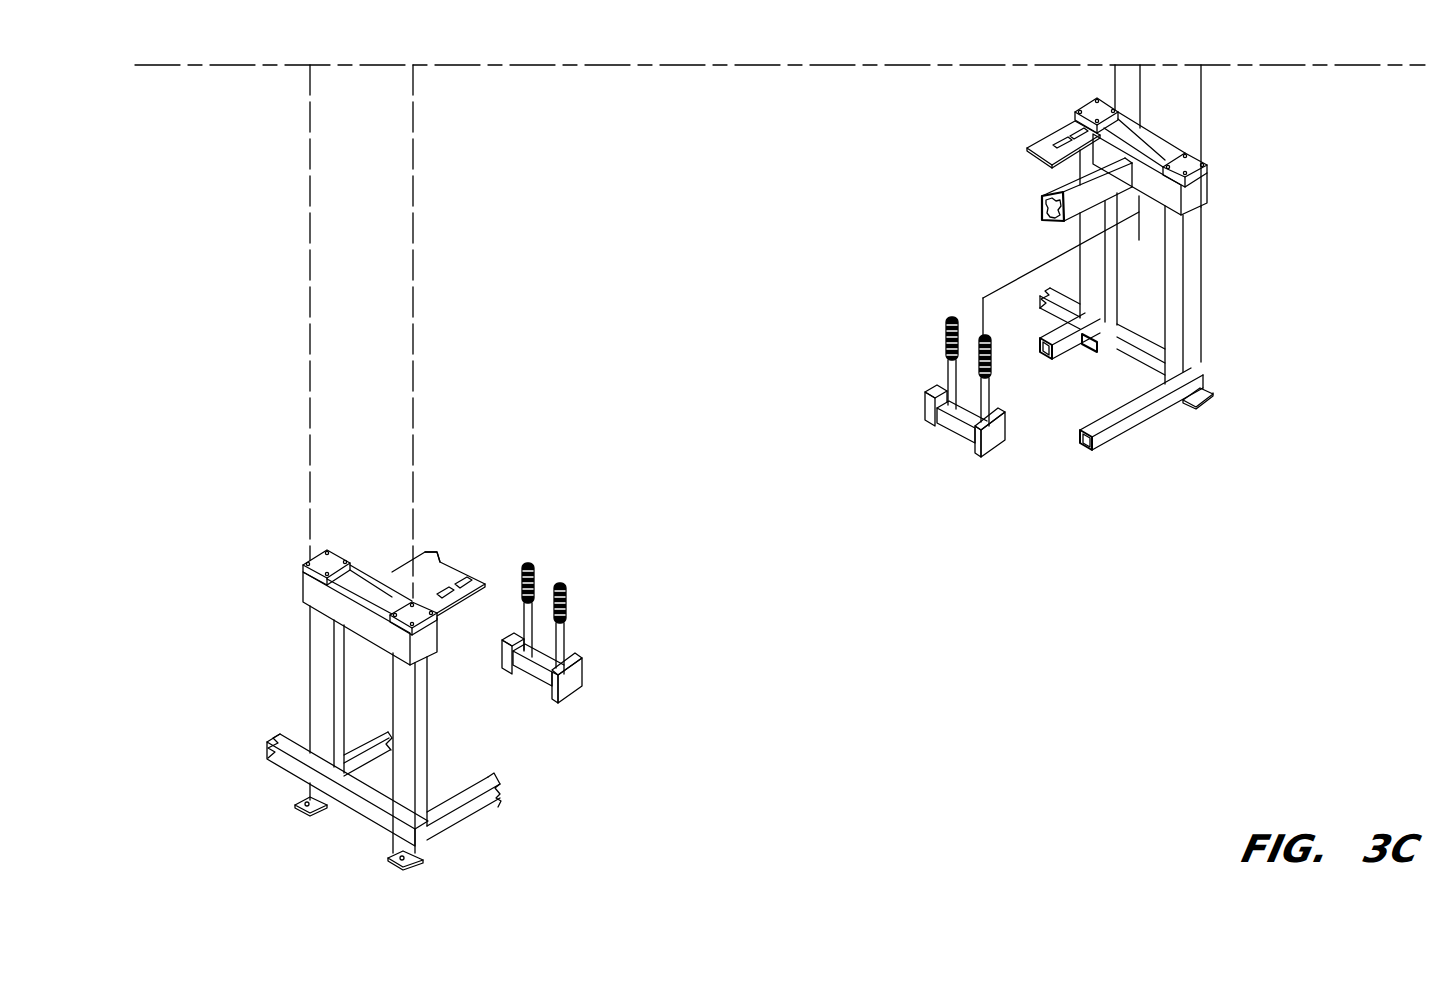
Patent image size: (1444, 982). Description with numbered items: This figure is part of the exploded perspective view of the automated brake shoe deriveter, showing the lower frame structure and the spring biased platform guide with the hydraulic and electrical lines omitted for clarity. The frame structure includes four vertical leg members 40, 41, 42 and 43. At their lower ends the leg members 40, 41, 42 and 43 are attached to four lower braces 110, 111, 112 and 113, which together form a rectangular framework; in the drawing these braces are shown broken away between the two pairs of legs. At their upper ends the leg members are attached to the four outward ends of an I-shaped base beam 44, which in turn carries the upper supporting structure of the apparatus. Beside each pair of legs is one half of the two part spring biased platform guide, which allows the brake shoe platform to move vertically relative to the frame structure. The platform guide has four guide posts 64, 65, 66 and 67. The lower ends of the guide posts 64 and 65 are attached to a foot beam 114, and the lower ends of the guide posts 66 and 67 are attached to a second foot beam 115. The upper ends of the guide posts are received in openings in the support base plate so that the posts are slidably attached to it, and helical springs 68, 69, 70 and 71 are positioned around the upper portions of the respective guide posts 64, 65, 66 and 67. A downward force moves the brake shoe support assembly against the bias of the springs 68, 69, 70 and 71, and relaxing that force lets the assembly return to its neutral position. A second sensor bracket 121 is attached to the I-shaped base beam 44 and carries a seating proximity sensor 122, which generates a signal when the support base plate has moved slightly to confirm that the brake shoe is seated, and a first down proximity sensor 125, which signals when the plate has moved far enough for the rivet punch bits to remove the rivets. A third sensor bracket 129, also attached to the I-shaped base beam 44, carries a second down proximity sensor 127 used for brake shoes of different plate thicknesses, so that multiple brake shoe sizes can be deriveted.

The vertical leg member 40 is at (433, 723).
The vertical leg member 41 is at (308, 667).
The vertical leg member 42 is at (1203, 330).
The vertical leg member 43 is at (1068, 252).
The I-shaped base beam 44 is at (1142, 140).
The guide post 64 is at (560, 635).
The guide post 65 is at (525, 675).
The guide post 66 is at (960, 418).
The guide post 67 is at (950, 372).
The helical spring 68 is at (567, 610).
The helical spring 69 is at (537, 573).
The helical spring 70 is at (983, 338).
The helical spring 71 is at (943, 342).
The lower brace 110 is at (462, 817).
The lower brace 111 is at (364, 812).
The lower brace 112 is at (353, 747).
The lower brace 113 is at (1123, 367).
The foot beam 114 is at (577, 697).
The second foot beam 115 is at (997, 447).
The second sensor bracket 121 is at (1040, 160).
The seating proximity sensor 122 is at (1073, 123).
The first down proximity sensor 125 is at (1047, 128).
The second down proximity sensor 127 is at (431, 555).
The third sensor bracket 129 is at (466, 572).